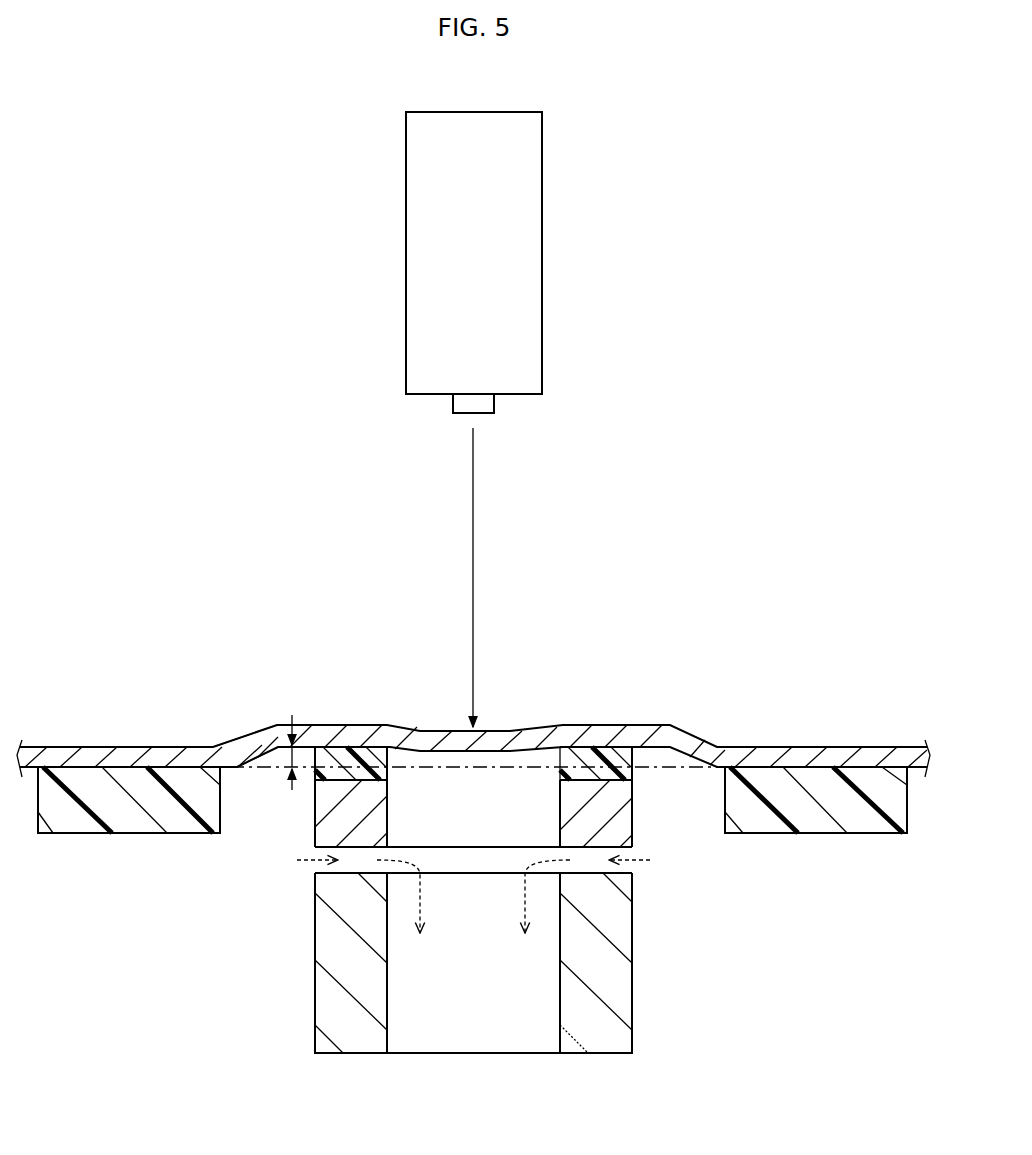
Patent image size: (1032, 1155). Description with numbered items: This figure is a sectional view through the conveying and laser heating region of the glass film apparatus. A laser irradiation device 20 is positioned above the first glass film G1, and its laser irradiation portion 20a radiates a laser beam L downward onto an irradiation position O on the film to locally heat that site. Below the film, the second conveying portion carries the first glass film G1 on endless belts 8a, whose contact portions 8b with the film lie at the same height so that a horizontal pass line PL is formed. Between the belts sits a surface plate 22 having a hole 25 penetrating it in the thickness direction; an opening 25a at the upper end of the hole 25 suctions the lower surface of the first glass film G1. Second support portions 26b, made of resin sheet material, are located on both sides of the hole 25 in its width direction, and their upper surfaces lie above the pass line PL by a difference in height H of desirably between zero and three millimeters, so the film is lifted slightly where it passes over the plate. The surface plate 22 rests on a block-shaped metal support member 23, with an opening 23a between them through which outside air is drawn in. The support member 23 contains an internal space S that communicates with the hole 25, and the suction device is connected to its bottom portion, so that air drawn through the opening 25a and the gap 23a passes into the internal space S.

The laser irradiation device 20 is at (562, 221).
The laser irradiation portion 20a is at (458, 403).
The laser beam L is at (475, 507).
The contact portion 8b is at (130, 762).
The belt 8a is at (132, 825).
The pass line PL is at (245, 772).
The first glass film G1 is at (247, 731).
The difference in height H is at (277, 765).
The surface plate 22 is at (644, 820).
The second support portion 26b is at (337, 745).
The opening 25a is at (562, 747).
The irradiation position O is at (470, 727).
The hole 25 is at (560, 812).
The opening (gap) 23a is at (315, 867).
The support member 23 is at (315, 987).
The internal space S is at (532, 990).